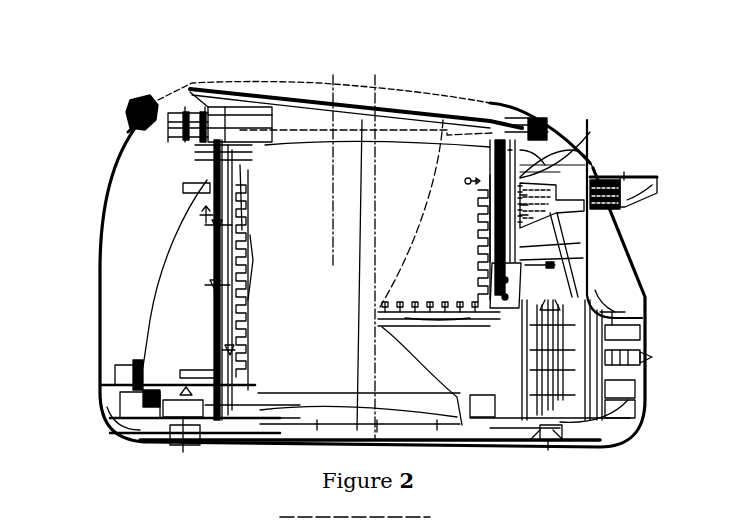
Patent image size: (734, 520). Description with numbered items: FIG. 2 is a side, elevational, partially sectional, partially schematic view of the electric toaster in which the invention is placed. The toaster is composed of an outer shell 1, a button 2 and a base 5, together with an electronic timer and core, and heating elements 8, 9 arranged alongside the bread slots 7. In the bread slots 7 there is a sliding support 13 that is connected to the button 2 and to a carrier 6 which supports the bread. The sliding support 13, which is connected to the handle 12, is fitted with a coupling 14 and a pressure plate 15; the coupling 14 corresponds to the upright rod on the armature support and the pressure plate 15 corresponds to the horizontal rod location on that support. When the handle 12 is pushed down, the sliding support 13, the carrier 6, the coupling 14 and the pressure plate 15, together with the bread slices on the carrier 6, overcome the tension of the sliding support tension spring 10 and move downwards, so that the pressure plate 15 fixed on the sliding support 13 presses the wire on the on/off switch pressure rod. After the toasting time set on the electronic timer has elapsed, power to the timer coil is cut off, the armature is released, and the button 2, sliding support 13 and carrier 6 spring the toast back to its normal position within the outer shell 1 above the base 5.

The outer shell 1 is at (97, 313).
The button 2 is at (657, 185).
The base 5 is at (293, 446).
The carrier 6 is at (480, 303).
The bread slots 7 is at (537, 519).
The handle 12 is at (557, 187).
The sliding support 13 is at (557, 180).
The coupling 14 is at (525, 243).
The pressure plate 15 is at (548, 266).
The left heating element 8 is at (224, 280).
The right heating element 9 is at (505, 224).
The sliding support tension spring 10 is at (587, 360).